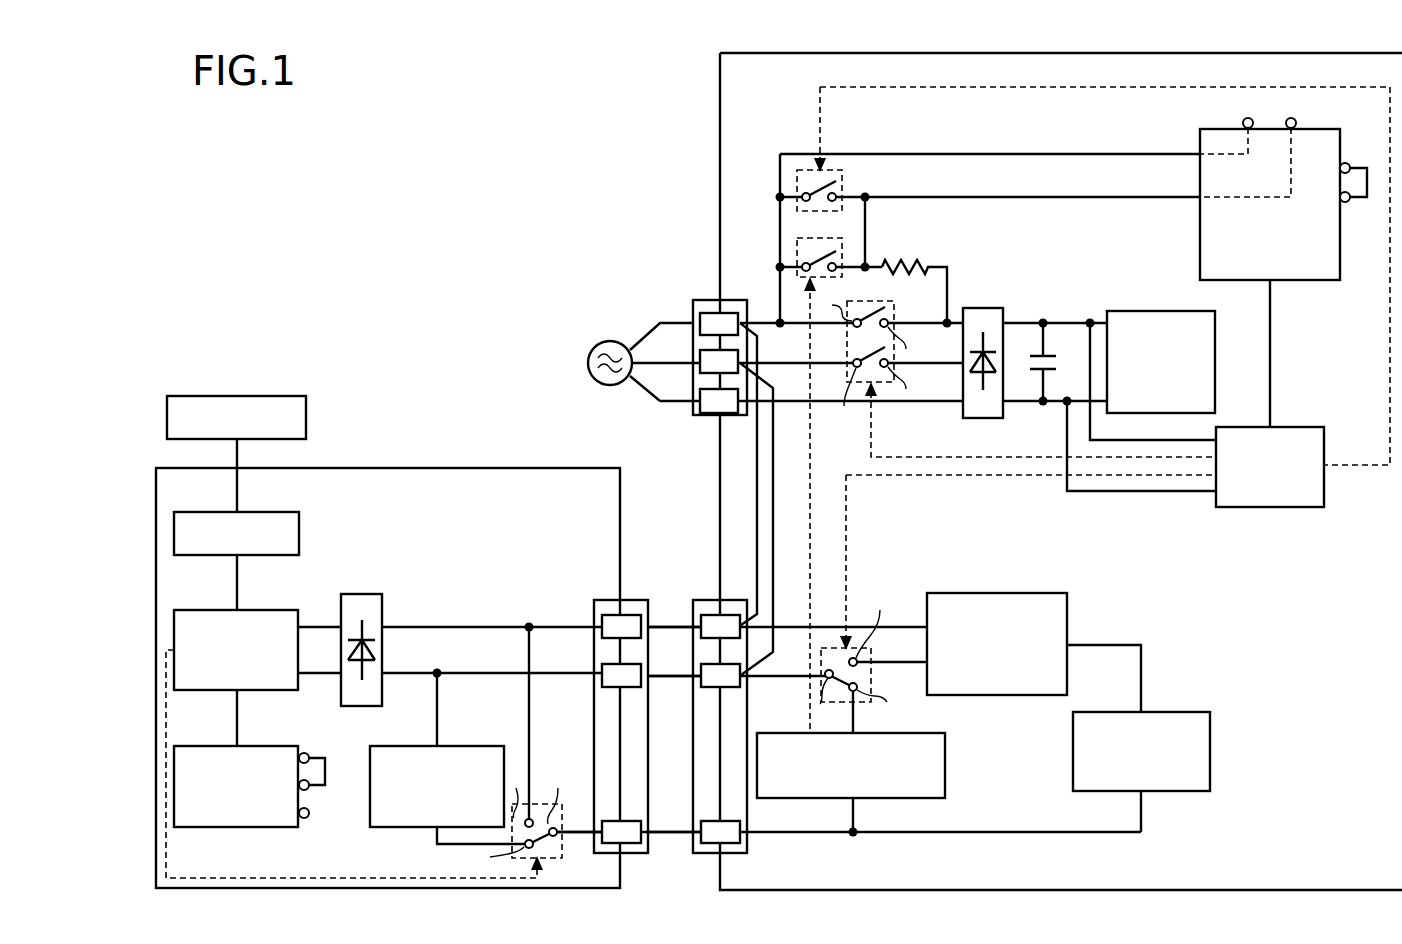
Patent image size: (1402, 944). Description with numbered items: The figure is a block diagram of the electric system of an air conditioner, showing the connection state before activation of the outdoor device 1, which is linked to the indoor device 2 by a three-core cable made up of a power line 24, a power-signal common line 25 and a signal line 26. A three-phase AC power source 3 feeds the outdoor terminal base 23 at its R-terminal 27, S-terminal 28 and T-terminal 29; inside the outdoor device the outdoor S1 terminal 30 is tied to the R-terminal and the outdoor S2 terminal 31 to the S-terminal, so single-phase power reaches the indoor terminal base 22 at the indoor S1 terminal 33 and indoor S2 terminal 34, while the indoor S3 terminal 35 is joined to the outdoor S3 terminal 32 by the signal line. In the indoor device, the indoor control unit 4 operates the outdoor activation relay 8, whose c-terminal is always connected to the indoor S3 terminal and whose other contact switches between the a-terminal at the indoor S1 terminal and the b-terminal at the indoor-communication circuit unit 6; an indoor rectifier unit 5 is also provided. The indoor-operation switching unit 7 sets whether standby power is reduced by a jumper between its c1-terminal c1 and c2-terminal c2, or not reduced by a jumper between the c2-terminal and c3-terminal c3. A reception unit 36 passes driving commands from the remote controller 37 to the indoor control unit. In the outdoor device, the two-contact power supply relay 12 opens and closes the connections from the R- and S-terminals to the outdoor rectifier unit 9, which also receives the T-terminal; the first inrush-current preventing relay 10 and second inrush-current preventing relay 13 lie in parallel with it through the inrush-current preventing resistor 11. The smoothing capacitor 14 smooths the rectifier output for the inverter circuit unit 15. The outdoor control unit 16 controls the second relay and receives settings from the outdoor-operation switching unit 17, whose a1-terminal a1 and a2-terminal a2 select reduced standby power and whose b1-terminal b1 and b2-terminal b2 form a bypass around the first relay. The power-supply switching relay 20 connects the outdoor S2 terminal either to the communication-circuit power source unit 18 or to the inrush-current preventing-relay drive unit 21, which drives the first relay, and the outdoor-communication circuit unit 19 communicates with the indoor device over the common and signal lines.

The outdoor device 1 is at (720, 96).
The indoor device 2 is at (540, 468).
The three-phase AC power source 3 is at (612, 341).
The indoor control unit 4 is at (255, 610).
The indoor rectifier unit 5 is at (365, 594).
The indoor-communication circuit unit 6 is at (452, 746).
The indoor-operation switching unit 7 is at (258, 778).
The outdoor activation relay 8 is at (562, 858).
The outdoor rectifier unit 9 is at (988, 308).
The first inrush-current preventing relay 10 is at (830, 240).
The inrush-current preventing resistor 11 is at (906, 260).
The power supply relay 12 is at (894, 306).
The second inrush-current preventing relay 13 is at (842, 185).
The smoothing capacitor 14 is at (1050, 360).
The inverter circuit unit 15 is at (1180, 311).
The outdoor control unit 16 is at (1292, 427).
The outdoor-operation switching unit 17 is at (1288, 202).
The communication-circuit power source unit 18 is at (1020, 593).
The outdoor-communication circuit unit 19 is at (1175, 712).
The power-supply switching relay 20 is at (871, 688).
The inrush-current preventing-relay drive unit 21 is at (936, 733).
The indoor terminal base 22 is at (606, 600).
The outdoor terminal base 23 is at (735, 300).
The power line 24 is at (668, 627).
The power-signal common line 25 is at (668, 676).
The signal line 26 is at (668, 832).
The R-terminal 27 is at (700, 335).
The S-terminal 28 is at (700, 373).
The T-terminal 29 is at (700, 411).
The outdoor S1 terminal 30 is at (708, 615).
The outdoor S2 terminal 31 is at (742, 688).
The outdoor S3 terminal 32 is at (712, 843).
The indoor S1 terminal 33 is at (606, 637).
The indoor S2 terminal 34 is at (606, 685).
The indoor S3 terminal 35 is at (624, 843).
The reception unit 36 is at (255, 512).
The remote controller 37 is at (255, 396).
The a1-terminal a1 is at (1347, 162).
The a2-terminal a2 is at (1347, 202).
The b1-terminal b1 is at (1246, 116).
The b2-terminal b2 is at (1292, 116).
The c1-terminal c1 is at (308, 752).
The c2-terminal c2 is at (309, 789).
The c3-terminal c3 is at (309, 816).